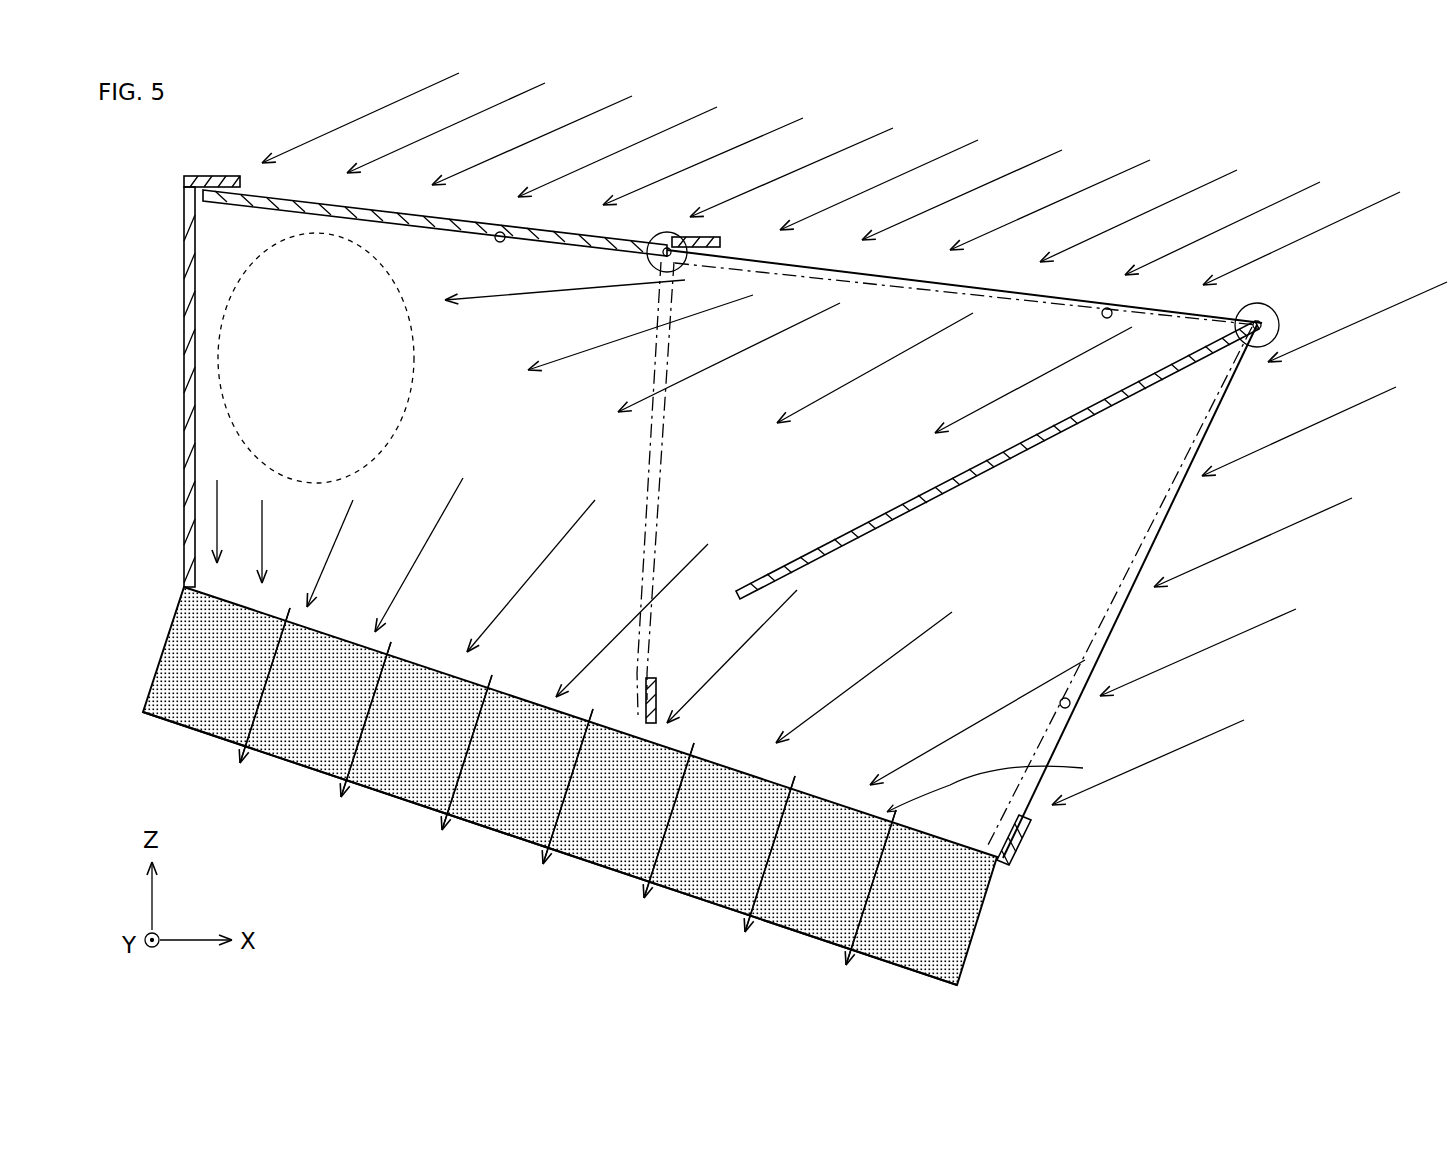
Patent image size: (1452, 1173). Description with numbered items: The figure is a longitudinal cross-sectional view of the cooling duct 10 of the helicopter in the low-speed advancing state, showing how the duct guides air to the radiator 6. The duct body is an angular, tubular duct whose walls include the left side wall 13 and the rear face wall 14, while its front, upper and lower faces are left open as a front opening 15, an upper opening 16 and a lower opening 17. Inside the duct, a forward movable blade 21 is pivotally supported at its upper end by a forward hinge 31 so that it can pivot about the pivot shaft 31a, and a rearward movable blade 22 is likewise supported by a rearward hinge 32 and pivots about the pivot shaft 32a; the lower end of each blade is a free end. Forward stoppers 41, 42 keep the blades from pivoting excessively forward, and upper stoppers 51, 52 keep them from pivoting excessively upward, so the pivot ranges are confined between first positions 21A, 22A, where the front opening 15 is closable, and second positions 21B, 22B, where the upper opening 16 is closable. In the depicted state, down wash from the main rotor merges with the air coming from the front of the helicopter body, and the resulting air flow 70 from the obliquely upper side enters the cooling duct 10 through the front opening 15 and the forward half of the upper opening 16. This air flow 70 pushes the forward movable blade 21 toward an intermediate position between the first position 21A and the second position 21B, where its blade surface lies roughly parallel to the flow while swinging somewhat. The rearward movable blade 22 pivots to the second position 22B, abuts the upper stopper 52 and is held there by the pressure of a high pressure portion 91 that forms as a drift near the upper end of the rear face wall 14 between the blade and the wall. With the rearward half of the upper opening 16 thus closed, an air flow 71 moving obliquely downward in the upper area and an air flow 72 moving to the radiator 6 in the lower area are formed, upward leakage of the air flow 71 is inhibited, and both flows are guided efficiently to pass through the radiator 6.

The radiator 6 is at (730, 908).
The cooling duct 10 is at (964, 464).
The left side wall 13 is at (1025, 288).
The rear face wall 14 is at (188, 418).
The front opening 15 is at (1083, 613).
The upper opening 16 is at (398, 245).
The lower opening 17 is at (1072, 591).
The forward movable blade 21 is at (1147, 377).
The first position 21A is at (1070, 703).
The second position 21B is at (1105, 308).
The rearward movable blade 22 is at (325, 195).
The first position 22A is at (637, 655).
The second position 22B is at (500, 232).
The forward hinge 31 is at (1265, 305).
The pivot shaft 31a is at (1280, 320).
The rearward hinge 32 is at (655, 247).
The pivot shaft 32a is at (672, 245).
The forward stopper 41 is at (1022, 840).
The forward stopper 42 is at (660, 727).
The upper stopper 51 is at (705, 240).
The upper stopper 52 is at (209, 178).
The air flow 70 is at (1040, 163).
The air flow 71 is at (802, 323).
The air flow 72 is at (570, 780).
The high pressure portion 91 is at (218, 318).